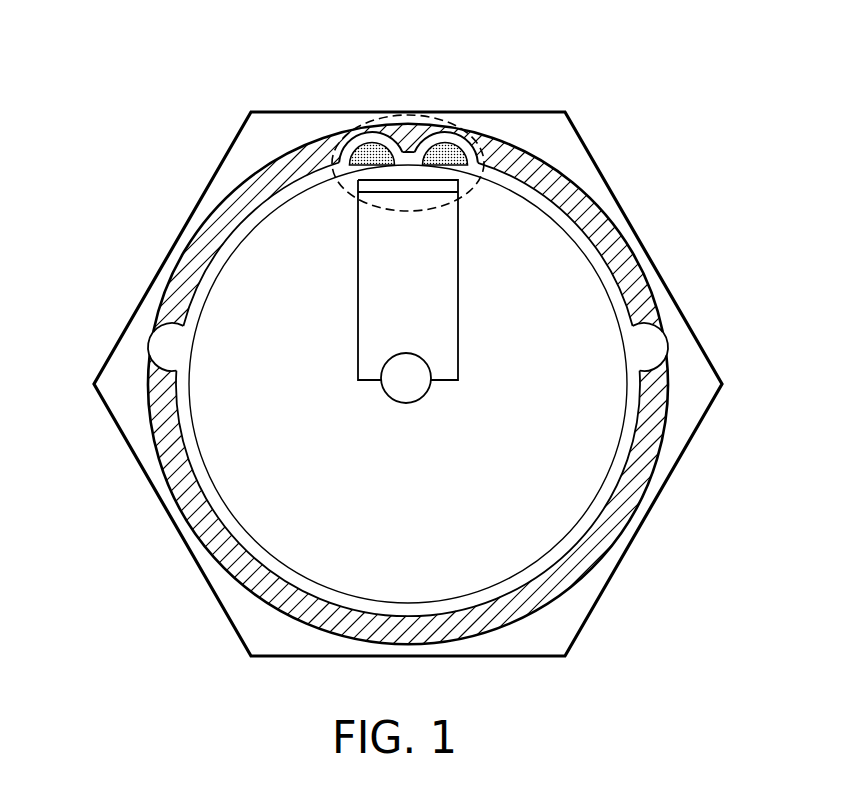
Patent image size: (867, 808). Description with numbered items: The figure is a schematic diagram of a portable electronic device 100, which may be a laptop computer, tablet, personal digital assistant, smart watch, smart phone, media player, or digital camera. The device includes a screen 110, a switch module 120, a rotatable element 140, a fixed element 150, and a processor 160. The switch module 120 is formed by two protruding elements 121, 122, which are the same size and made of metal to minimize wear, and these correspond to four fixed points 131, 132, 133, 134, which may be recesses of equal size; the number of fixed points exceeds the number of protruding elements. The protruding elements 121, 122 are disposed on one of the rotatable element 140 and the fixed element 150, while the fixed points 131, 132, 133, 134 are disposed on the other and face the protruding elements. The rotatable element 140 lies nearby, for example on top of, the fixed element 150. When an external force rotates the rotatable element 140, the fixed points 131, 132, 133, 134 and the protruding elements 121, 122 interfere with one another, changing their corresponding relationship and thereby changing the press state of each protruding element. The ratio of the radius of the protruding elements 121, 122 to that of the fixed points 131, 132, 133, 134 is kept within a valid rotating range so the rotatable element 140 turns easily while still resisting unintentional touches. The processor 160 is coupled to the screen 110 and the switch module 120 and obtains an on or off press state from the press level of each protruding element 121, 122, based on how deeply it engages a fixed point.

The portable electronic device 100 is at (725, 681).
The screen 110 is at (568, 297).
The switch module 120 is at (522, 128).
The protruding element 121 is at (445, 165).
The protruding element 122 is at (372, 165).
The fixed point 131 is at (455, 131).
The fixed point 132 is at (371, 131).
The fixed point 133 is at (163, 348).
The fixed point 134 is at (650, 348).
The rotatable element 140 is at (672, 408).
The fixed element 150 is at (585, 518).
The processor 160 is at (415, 402).